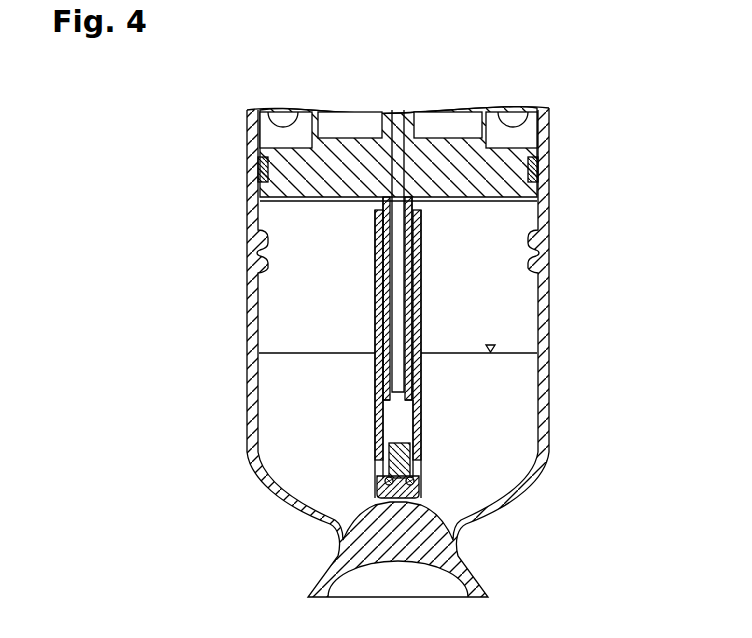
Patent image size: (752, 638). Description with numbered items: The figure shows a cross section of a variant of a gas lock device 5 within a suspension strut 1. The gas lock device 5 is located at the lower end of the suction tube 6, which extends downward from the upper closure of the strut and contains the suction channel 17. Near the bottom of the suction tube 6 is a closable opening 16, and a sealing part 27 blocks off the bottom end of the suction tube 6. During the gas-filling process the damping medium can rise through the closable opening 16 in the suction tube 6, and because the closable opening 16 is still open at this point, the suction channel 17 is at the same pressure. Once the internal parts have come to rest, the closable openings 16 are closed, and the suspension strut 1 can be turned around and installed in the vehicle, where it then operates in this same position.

The suspension strut 1 is at (623, 118).
The suction channel 17 is at (410, 236).
The suction tube 6 is at (410, 303).
The gas lock device 5 is at (380, 397).
The closable opening 16 is at (413, 463).
The sealing part 27 is at (420, 494).